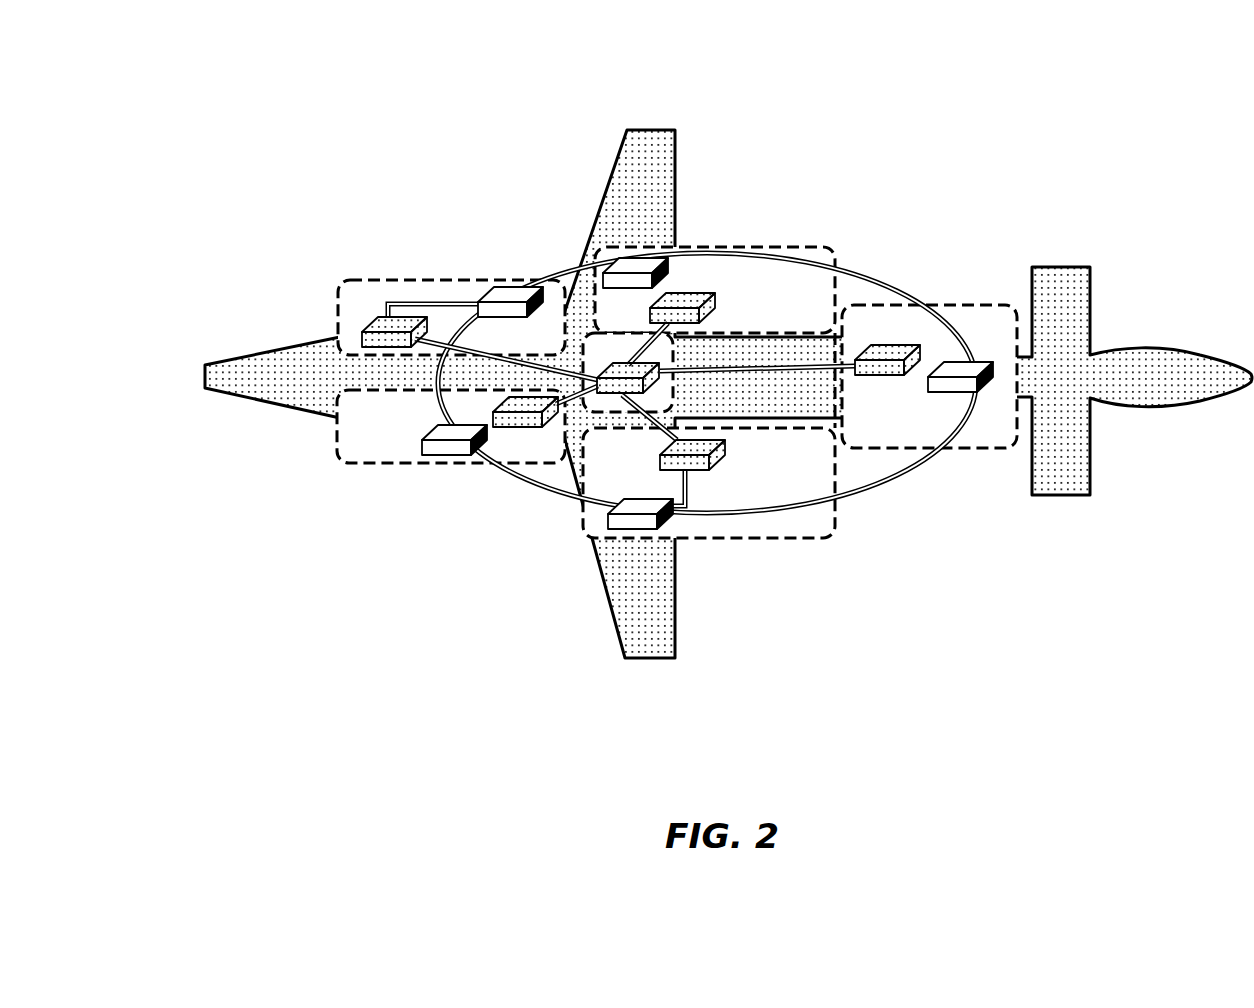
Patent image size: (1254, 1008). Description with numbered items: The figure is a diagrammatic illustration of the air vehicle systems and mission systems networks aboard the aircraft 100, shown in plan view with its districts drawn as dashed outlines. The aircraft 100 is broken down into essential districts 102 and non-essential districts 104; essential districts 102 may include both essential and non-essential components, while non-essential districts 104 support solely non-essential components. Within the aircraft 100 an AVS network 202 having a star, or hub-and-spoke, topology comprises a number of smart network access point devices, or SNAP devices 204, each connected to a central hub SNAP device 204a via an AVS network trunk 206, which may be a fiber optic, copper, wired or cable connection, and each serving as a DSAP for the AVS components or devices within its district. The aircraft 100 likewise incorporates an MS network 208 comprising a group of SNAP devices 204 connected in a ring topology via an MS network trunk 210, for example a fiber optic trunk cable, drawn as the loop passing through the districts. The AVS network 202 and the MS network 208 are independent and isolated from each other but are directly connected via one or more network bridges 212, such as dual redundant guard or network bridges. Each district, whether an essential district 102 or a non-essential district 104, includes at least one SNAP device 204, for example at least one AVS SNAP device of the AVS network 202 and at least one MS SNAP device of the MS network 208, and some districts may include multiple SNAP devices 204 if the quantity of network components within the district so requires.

The aircraft 100 is at (196, 142).
The essential district 102 is at (453, 278).
The non-essential district 104 is at (962, 305).
The AVS network 202 is at (795, 388).
The smart network access point (SNAP) device 204 is at (376, 327).
The central/hub SNAP device 204a is at (617, 385).
The AVS network trunk 206 is at (748, 366).
The MS network 208 is at (876, 266).
The MS network trunk 210 is at (790, 515).
The network bridge 212 is at (430, 302).